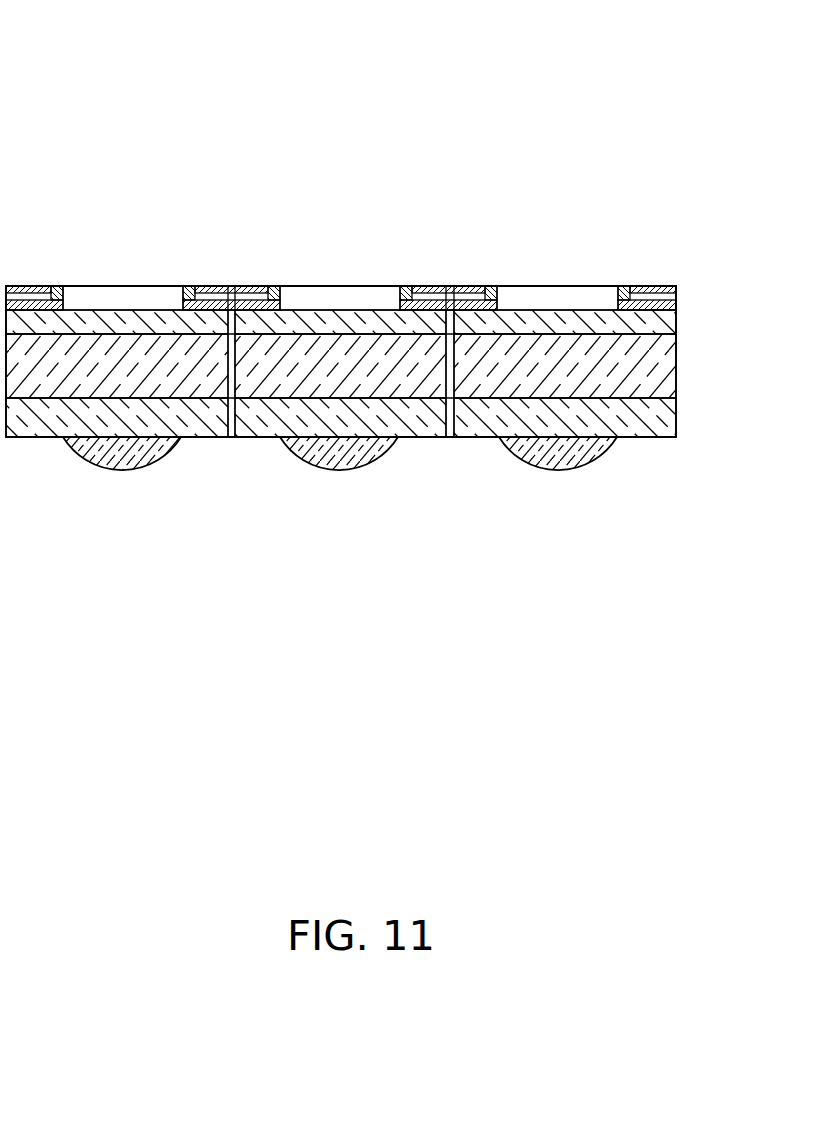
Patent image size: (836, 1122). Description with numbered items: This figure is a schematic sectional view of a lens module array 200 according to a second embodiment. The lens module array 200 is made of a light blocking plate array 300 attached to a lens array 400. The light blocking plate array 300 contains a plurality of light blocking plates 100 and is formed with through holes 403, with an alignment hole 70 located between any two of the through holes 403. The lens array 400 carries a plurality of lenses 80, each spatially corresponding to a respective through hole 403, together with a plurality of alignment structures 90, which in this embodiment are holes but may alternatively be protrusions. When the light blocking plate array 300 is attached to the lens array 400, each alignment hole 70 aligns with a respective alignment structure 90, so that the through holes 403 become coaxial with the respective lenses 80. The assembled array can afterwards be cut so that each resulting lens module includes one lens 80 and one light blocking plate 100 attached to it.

The lens module array 200 is at (165, 75).
The light blocking plate array 300 is at (580, 202).
The light blocking plate 100 is at (378, 348).
The through hole 403 is at (332, 297).
The alignment hole 70 is at (231, 290).
The lens array 400 is at (662, 417).
The lens 80 is at (138, 452).
The alignment structure 90 is at (452, 430).